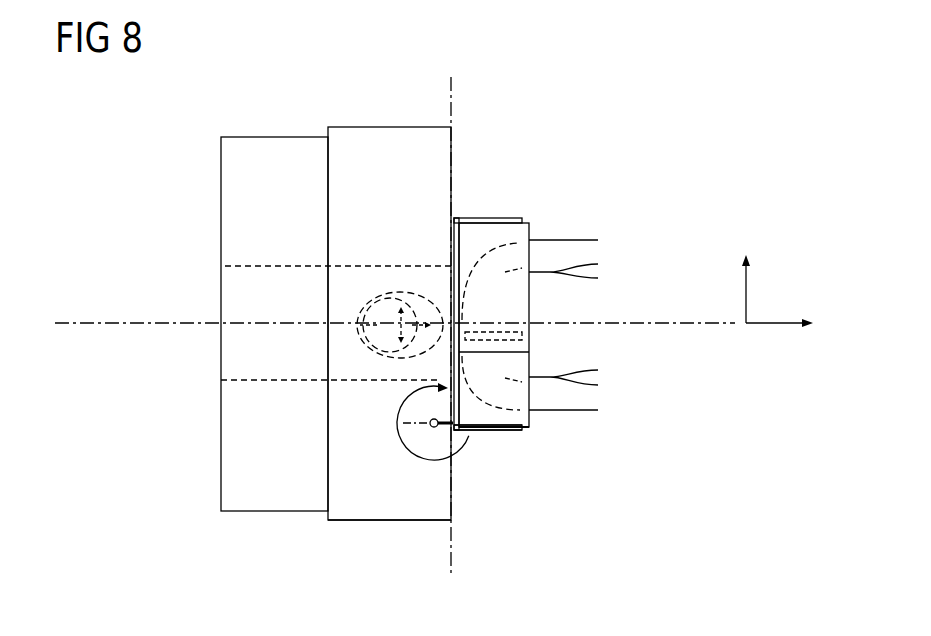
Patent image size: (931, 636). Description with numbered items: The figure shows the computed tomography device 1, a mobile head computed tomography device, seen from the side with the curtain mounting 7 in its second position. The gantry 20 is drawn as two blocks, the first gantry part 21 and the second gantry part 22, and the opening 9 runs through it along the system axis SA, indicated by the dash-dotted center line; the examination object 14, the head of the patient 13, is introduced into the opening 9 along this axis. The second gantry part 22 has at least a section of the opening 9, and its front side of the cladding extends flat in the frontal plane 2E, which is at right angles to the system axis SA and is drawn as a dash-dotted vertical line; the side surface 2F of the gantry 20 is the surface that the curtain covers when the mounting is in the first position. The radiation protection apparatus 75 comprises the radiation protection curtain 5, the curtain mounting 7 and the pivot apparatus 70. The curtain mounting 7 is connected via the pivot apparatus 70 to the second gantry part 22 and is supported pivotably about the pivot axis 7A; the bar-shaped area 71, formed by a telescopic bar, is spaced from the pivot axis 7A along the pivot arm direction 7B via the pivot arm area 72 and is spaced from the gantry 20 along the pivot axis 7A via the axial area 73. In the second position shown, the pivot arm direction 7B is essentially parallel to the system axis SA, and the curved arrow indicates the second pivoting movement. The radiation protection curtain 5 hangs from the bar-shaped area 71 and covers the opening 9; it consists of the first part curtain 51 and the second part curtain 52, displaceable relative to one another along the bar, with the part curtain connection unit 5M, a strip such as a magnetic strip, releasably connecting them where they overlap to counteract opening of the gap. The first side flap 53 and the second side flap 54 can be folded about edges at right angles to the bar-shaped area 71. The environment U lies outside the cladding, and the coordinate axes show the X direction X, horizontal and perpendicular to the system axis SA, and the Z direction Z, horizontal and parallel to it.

The computed tomography device 1 is at (294, 274).
The gantry 20 is at (294, 274).
The first gantry part 21 is at (218, 181).
The second gantry part 22 is at (368, 138).
The opening 9 is at (233, 295).
The examination object 14 is at (362, 334).
The frontal plane 2E is at (454, 81).
The side surface 2F is at (360, 487).
The system axis SA is at (107, 323).
The curtain mounting 7 is at (469, 222).
The bar-shaped area 71 is at (469, 222).
The second side flap 54 is at (483, 216).
The second part curtain 52 is at (524, 232).
The part curtain connection unit 5M is at (528, 336).
The first part curtain 51 is at (524, 418).
The first side flap 53 is at (500, 432).
The pivot arm area 72 is at (443, 432).
The patient 13 is at (580, 240).
The pivot arm direction 7B is at (413, 430).
The axial area 73 is at (446, 517).
The pivot apparatus 70 is at (446, 517).
The pivot axis 7A is at (433, 430).
The radiation protection apparatus 75 is at (738, 442).
The radiation protection curtain 5 is at (686, 422).
The environment U is at (556, 119).
The X direction X is at (744, 293).
The Z direction Z is at (773, 325).